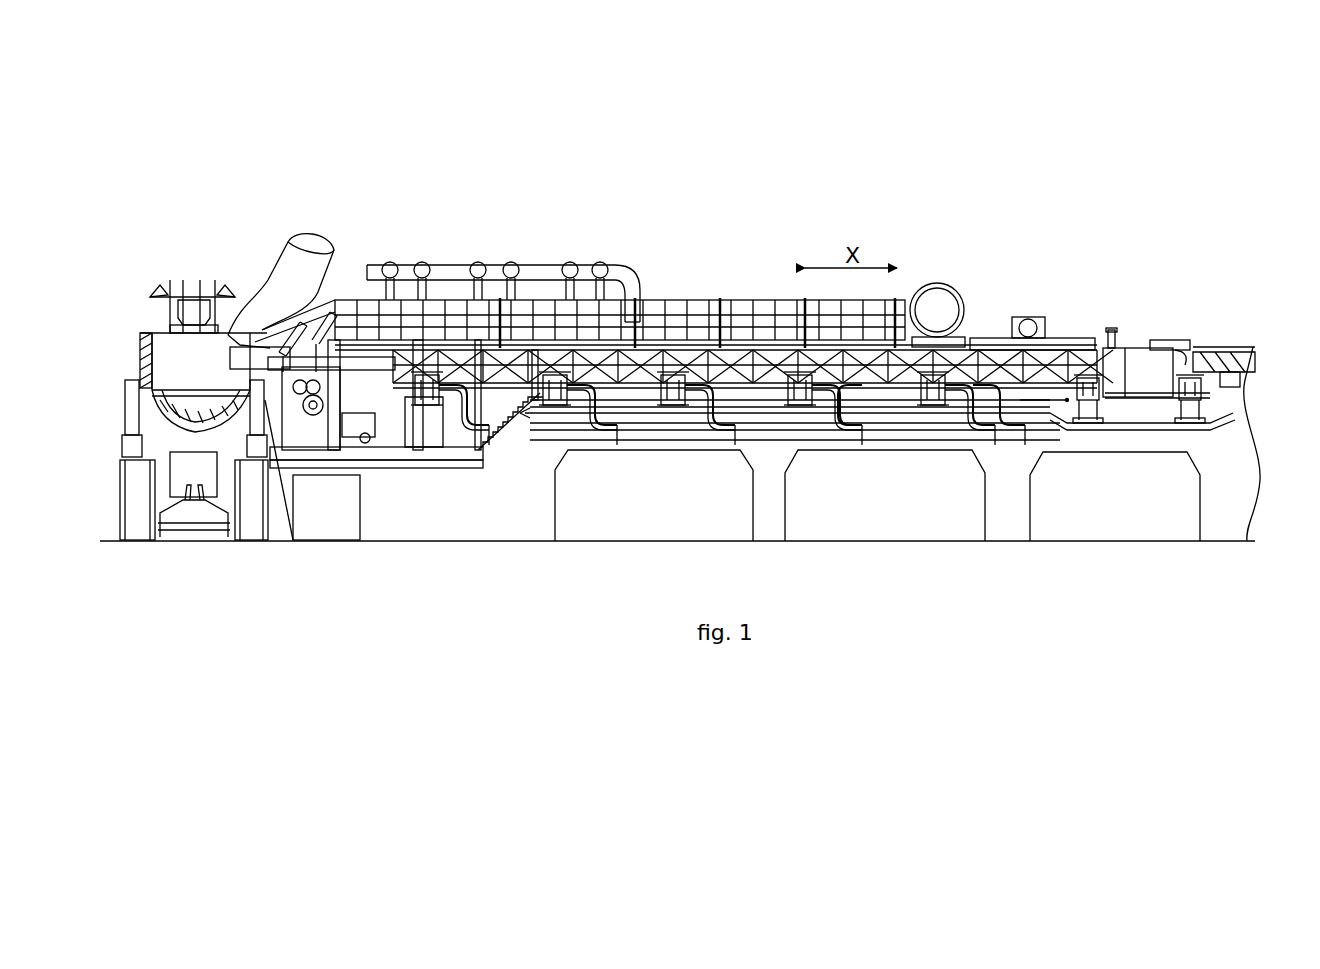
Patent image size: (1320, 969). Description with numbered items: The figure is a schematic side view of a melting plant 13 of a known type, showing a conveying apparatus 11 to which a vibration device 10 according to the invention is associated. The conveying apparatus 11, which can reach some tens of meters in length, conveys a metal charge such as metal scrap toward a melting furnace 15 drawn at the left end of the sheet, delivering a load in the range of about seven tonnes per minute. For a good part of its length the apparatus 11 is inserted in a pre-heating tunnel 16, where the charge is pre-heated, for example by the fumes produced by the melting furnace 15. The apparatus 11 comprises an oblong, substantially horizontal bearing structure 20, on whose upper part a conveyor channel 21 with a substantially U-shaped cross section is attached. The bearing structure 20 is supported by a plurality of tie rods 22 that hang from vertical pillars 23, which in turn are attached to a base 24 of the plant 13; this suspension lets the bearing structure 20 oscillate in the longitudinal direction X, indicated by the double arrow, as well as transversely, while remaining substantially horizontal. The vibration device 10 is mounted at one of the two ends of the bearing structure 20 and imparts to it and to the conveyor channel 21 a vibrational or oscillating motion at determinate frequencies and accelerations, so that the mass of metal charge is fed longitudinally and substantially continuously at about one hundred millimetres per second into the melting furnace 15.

The vibration device 10 is at (1145, 318).
The conveying apparatus 11 is at (992, 320).
The melting plant 13 is at (255, 245).
The melting furnace 15 is at (137, 352).
The pre-heating tunnel 16 is at (727, 300).
The bearing structure 20 is at (962, 383).
The conveyor channel 21 is at (880, 395).
The tie rods 22 is at (1177, 390).
The vertical pillars 23 is at (1180, 408).
The base 24 is at (1190, 422).